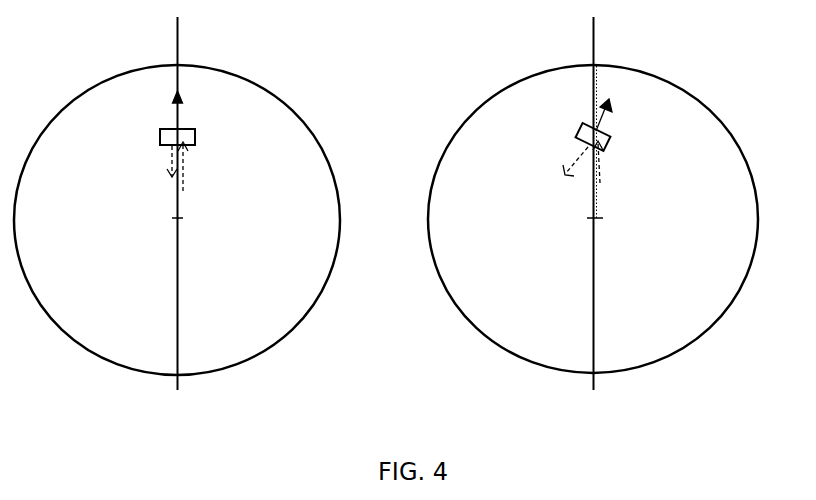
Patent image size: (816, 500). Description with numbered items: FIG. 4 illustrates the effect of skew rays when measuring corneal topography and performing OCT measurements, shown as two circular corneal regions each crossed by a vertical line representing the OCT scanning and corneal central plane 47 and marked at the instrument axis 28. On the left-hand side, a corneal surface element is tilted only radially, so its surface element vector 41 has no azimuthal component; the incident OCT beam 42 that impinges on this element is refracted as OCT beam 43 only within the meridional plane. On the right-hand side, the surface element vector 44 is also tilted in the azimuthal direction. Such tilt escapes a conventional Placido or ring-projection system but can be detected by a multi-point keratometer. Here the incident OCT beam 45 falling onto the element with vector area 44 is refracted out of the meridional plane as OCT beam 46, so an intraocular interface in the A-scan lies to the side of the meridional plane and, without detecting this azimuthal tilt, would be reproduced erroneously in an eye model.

The instrument axis 28 is at (410, 220).
The surface element vector 41 is at (198, 95).
The incident OCT beam 42 is at (200, 166).
The OCT beam optically refracted at the surface element 43 is at (152, 162).
The surface element vector 44 is at (617, 104).
The incident OCT beam 45 is at (617, 162).
The OCT beam optically refracted at the surface element 46 is at (560, 164).
The OCT scanning and corneal central plane 47 is at (386, 202).